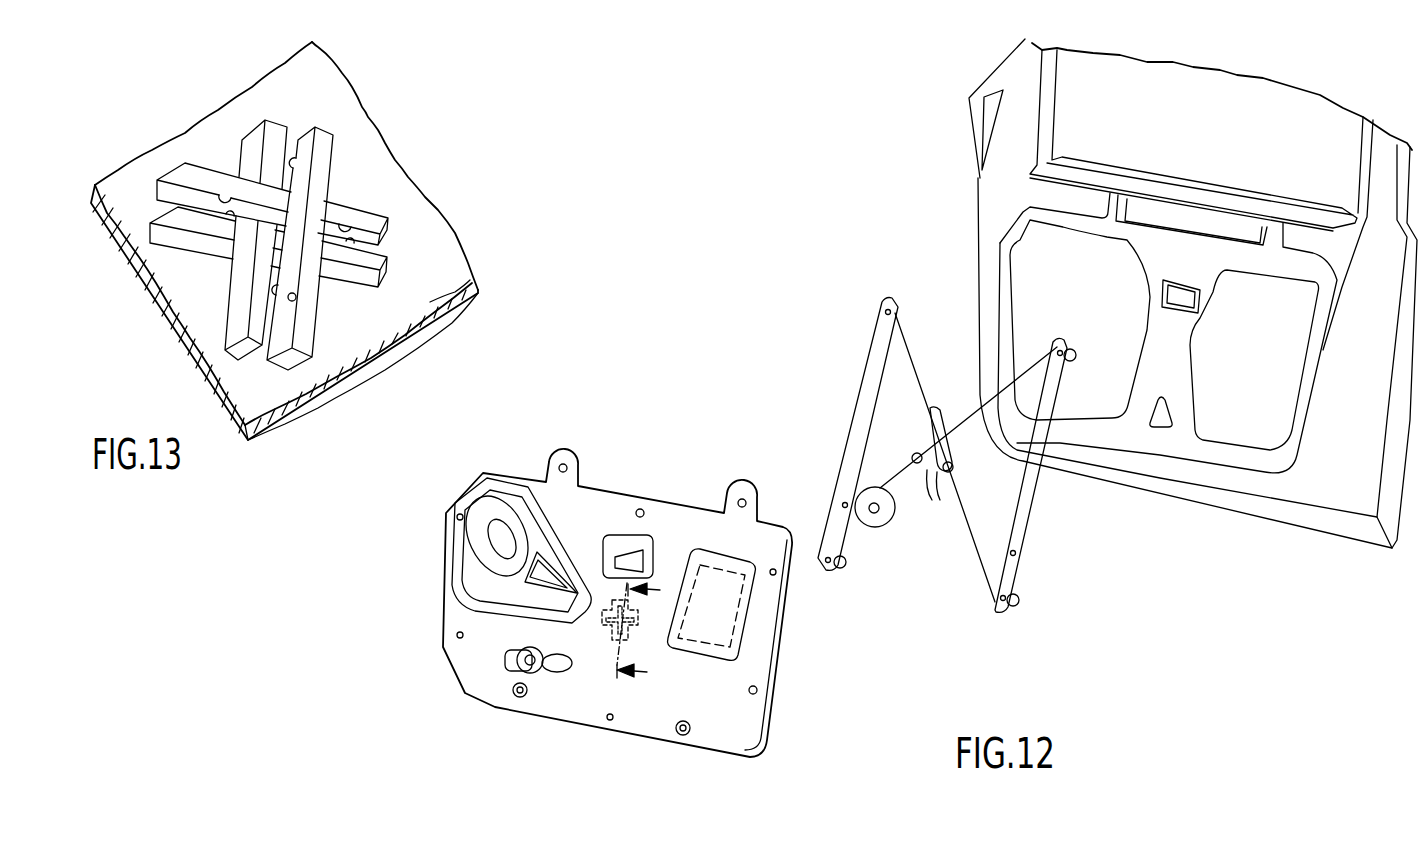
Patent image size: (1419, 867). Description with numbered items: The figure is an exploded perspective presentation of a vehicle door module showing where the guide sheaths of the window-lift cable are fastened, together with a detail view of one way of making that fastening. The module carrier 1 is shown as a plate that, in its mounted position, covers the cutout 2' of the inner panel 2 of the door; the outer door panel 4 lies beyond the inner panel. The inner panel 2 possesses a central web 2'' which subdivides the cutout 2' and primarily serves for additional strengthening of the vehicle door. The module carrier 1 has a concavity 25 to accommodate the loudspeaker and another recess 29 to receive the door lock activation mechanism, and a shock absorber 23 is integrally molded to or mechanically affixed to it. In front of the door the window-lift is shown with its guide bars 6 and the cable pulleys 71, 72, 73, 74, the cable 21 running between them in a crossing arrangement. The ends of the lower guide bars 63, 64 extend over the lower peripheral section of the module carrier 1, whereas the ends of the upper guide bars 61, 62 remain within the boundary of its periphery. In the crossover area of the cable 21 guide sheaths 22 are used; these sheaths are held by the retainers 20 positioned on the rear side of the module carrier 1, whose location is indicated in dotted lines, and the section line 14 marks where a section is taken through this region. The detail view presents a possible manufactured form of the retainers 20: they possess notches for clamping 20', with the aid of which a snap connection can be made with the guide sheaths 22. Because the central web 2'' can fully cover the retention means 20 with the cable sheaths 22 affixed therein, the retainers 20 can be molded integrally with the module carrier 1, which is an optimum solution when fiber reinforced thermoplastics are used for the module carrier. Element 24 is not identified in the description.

In FIG. 13, the module carrier 1 is at (373, 162).
In FIG. 12, the module carrier 1 is at (720, 727).
In FIG. 13, the retainers 20 is at (293, 227).
In FIG. 13, the notches for clamping 20' is at (280, 314).
In FIG. 12, the inner panel of the door 2 is at (1197, 304).
In FIG. 12, the cutout 2' is at (1153, 337).
In FIG. 12, the central web 2'' is at (1209, 351).
In FIG. 12, the outer door panel 4 is at (993, 110).
In FIG. 12, the guide bars 6 is at (868, 408).
In FIG. 12, the upper guide bar 61 is at (870, 307).
In FIG. 12, the upper guide bar 62 is at (1072, 376).
In FIG. 12, the lower guide bar 63 is at (857, 551).
In FIG. 12, the lower guide bar 64 is at (1025, 586).
In FIG. 12, the upper cable pulley 71 is at (903, 307).
In FIG. 12, the upper cable pulley 72 is at (1070, 357).
In FIG. 12, the lower cable pulley 73 is at (840, 567).
In FIG. 12, the lower cable pulley 74 is at (1013, 602).
In FIG. 12, the cable 21 is at (975, 558).
In FIG. 12, the guide sheaths 22 is at (932, 469).
In FIG. 12, the shock absorber 23 is at (723, 630).
In FIG. 12, the fastening element 24 is at (560, 670).
In FIG. 12, the concavity 25 is at (478, 562).
In FIG. 12, the recess 29 is at (647, 547).
In FIG. 12, the section line 14 is at (650, 636).